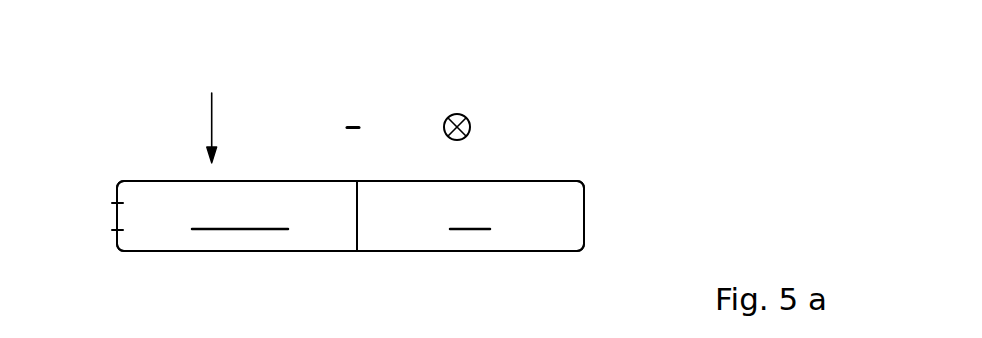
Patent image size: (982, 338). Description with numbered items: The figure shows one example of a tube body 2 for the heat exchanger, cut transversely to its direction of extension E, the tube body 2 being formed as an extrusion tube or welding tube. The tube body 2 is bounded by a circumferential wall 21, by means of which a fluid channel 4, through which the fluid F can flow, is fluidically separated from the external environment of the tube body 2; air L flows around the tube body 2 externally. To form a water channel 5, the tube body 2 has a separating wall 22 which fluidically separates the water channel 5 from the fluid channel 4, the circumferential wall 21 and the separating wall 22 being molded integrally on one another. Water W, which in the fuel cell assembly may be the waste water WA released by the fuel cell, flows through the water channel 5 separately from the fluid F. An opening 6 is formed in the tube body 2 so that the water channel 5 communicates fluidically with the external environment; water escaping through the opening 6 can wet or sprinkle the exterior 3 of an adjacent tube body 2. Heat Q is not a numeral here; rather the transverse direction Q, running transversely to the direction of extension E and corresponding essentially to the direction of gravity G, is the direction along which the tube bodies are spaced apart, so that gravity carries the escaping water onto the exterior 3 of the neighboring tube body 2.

The tube body 2 is at (650, 153).
The exterior 3 is at (585, 228).
The fluid channel 4 is at (470, 216).
The water channel 5 is at (240, 216).
The opening 6 is at (117, 213).
The circumferential wall 21 is at (603, 202).
The separating wall 22 is at (359, 235).
The direction of extension E is at (470, 126).
The air L is at (354, 114).
The transverse direction Q is at (210, 125).